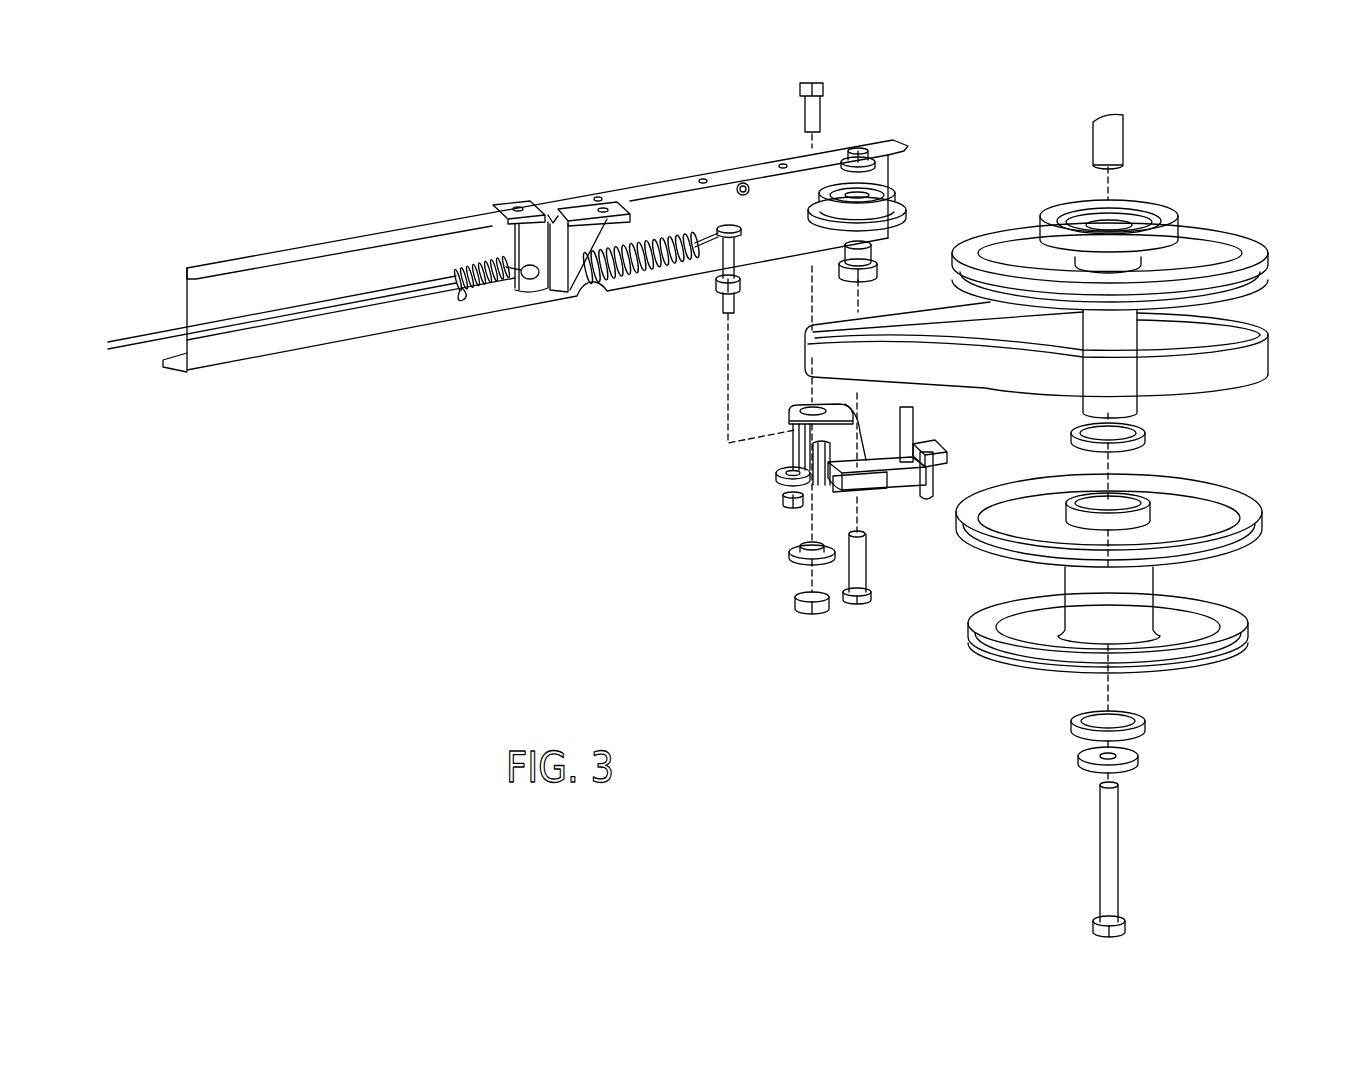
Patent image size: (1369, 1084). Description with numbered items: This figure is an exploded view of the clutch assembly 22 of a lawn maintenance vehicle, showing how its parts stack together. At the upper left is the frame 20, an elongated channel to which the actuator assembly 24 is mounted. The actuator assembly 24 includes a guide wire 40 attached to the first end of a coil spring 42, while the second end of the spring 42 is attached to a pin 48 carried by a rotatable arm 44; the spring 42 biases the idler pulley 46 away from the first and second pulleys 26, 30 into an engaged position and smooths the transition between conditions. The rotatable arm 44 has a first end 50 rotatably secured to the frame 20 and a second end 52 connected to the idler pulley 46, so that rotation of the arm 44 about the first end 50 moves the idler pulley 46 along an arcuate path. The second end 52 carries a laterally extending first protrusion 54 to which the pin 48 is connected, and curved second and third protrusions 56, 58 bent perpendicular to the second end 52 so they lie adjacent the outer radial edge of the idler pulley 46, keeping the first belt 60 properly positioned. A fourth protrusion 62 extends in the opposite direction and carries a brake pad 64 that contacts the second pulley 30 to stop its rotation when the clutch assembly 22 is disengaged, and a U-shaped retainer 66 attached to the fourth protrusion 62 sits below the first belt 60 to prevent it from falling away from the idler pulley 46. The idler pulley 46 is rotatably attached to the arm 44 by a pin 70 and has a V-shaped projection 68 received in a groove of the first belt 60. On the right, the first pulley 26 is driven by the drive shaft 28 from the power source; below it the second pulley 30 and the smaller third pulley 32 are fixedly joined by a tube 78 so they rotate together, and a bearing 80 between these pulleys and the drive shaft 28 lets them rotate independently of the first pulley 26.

The frame 20 is at (372, 242).
The clutch assembly 22 is at (697, 573).
The actuator assembly 24 is at (512, 342).
The first pulley 26 is at (1205, 256).
The drive shaft 28 is at (1113, 143).
The second pulley 30 is at (1200, 514).
The third pulley 32 is at (1233, 620).
The guide wire 40 is at (347, 303).
The spring 42 is at (645, 268).
The rotatable arm 44 is at (893, 496).
The idler pulley 46 is at (908, 190).
The pin 48 is at (731, 251).
The first end 50 is at (790, 408).
The second end 52 is at (845, 483).
The first protrusion 54 is at (779, 476).
The second protrusion 56 is at (795, 450).
The third protrusion 58 is at (818, 471).
The first belt 60 is at (1005, 372).
The fourth protrusion 62 is at (880, 468).
The brake pad 64 is at (949, 463).
The retainer 66 is at (921, 500).
The V-shaped projection 68 is at (906, 215).
The pin 70 is at (863, 580).
The tube 78 is at (1120, 592).
The bearing 80 is at (1140, 442).